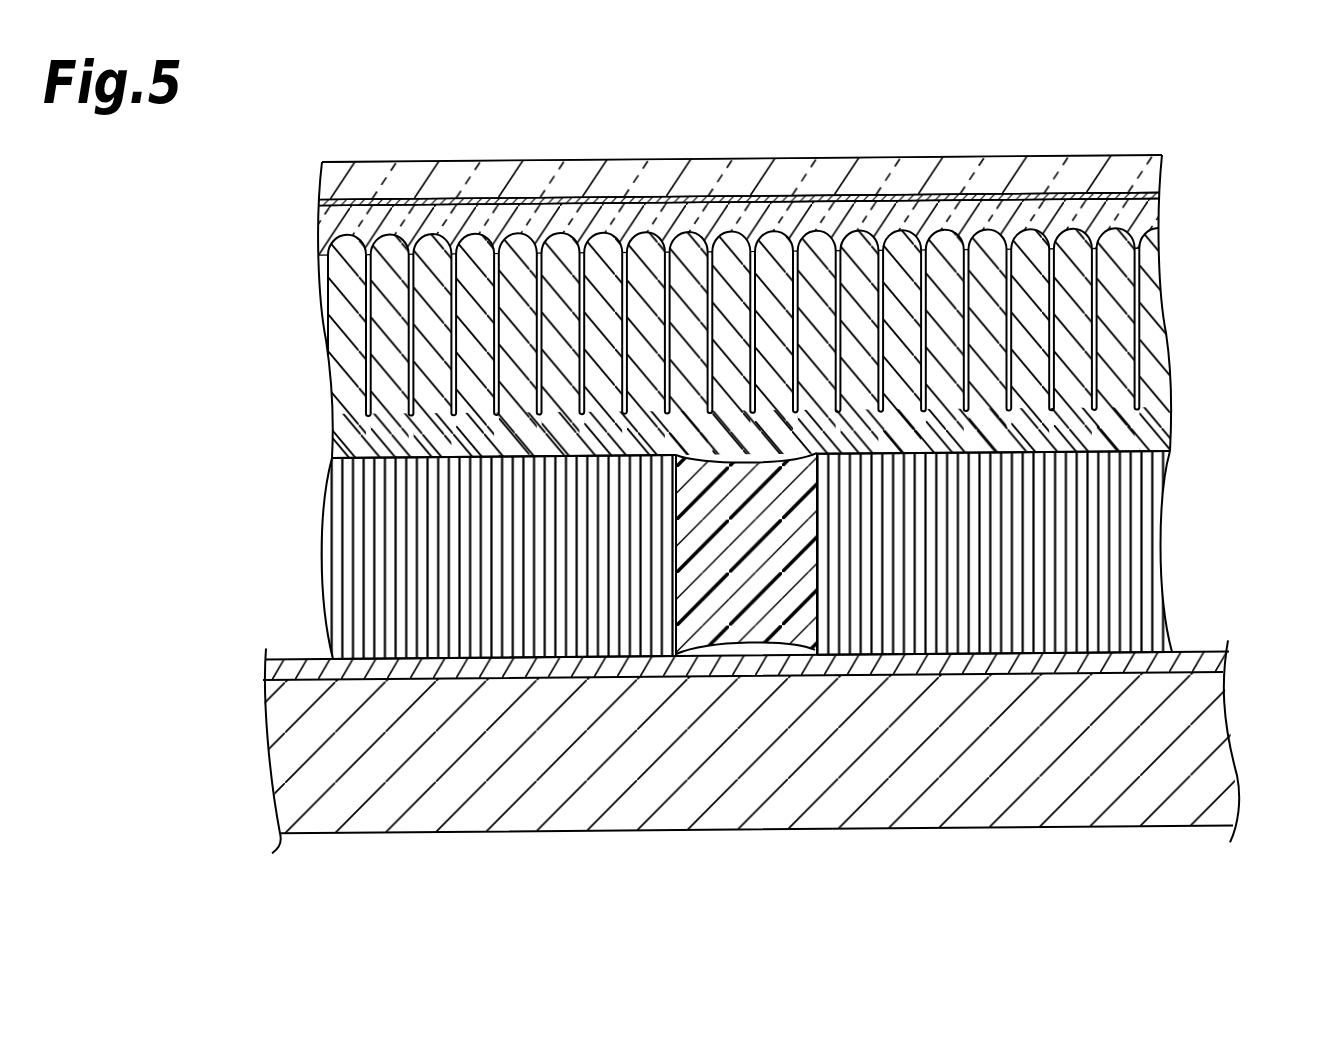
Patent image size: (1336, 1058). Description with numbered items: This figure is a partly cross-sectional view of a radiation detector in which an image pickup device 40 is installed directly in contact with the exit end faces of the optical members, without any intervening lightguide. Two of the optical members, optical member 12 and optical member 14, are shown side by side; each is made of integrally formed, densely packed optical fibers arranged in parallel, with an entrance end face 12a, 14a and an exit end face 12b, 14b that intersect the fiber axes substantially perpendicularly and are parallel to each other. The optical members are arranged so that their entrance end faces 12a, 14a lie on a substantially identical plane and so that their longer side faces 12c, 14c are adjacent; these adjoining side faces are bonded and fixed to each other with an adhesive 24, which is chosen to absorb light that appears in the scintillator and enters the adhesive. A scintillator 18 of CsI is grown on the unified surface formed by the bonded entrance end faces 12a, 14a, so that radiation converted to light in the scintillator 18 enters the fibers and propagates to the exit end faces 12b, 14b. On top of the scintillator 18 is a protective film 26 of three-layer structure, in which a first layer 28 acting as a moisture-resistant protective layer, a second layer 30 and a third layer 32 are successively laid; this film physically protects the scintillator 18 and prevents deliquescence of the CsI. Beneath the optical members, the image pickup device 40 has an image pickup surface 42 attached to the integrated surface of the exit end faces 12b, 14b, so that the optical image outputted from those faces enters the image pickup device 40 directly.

The optical member 12 is at (479, 379).
The entrance end face 12a is at (345, 456).
The exit end face 12b is at (348, 648).
The longer side face 12c is at (680, 468).
The optical member 14 is at (1020, 375).
The entrance end face 14a is at (1150, 450).
The exit end face 14b is at (1128, 652).
The longer side face 14c is at (811, 480).
The scintillator 18 is at (1162, 356).
The adhesive 24 is at (750, 497).
The protective film 26 is at (822, 218).
The first layer 28 is at (1158, 230).
The second layer 30 is at (1160, 200).
The third layer 32 is at (1165, 171).
The image pickup device 40 is at (1160, 810).
The image pickup surface 42 is at (1213, 663).